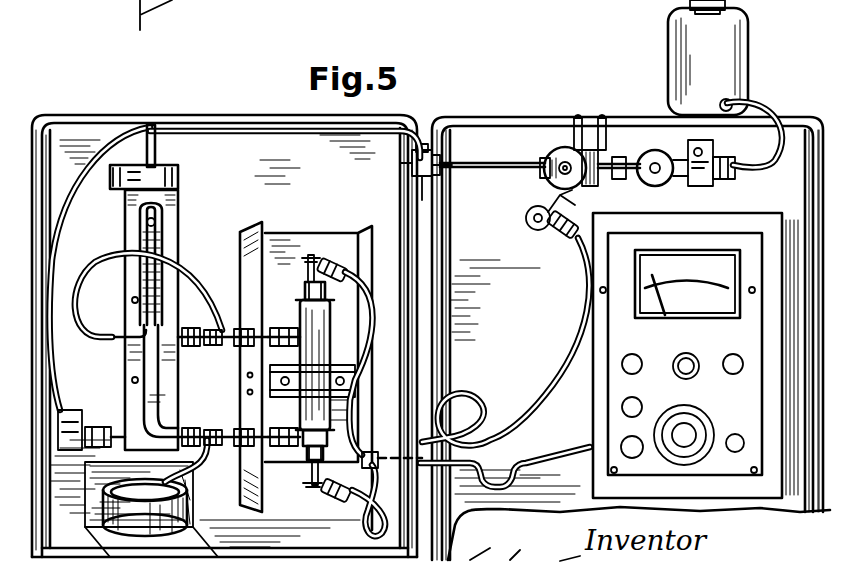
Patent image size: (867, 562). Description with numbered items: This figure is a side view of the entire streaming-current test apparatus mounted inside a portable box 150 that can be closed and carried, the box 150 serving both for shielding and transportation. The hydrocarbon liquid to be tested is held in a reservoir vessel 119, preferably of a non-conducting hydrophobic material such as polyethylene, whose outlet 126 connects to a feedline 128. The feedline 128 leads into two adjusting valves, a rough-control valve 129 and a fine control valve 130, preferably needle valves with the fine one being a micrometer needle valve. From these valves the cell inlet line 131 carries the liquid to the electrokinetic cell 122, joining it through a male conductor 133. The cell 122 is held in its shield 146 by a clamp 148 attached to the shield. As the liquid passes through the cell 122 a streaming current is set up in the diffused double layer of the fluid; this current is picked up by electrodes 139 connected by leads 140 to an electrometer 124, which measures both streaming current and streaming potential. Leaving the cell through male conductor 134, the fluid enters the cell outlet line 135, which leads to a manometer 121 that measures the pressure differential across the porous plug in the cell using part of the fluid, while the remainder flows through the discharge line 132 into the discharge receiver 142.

The reservoir vessel 119 is at (718, 47).
The manometer 121 is at (182, 198).
The electrokinetic cell 122 is at (298, 298).
The electrometer 124 is at (667, 217).
The outlet 126 is at (732, 100).
The feedline 128 is at (778, 106).
The adjusting valve 129 is at (655, 155).
The fine control valve 130 is at (570, 148).
The cell inlet line 131 is at (270, 128).
The discharge line 132 is at (195, 285).
The male conductor 133 is at (284, 440).
The male conductor 134 is at (283, 332).
The cell outlet line 135 is at (228, 330).
The electrodes 139 is at (310, 258).
The leads 140 is at (333, 265).
The discharge receiver 142 is at (195, 518).
The shield 146 is at (243, 232).
The clamp 148 is at (348, 378).
The box 150 is at (210, 115).